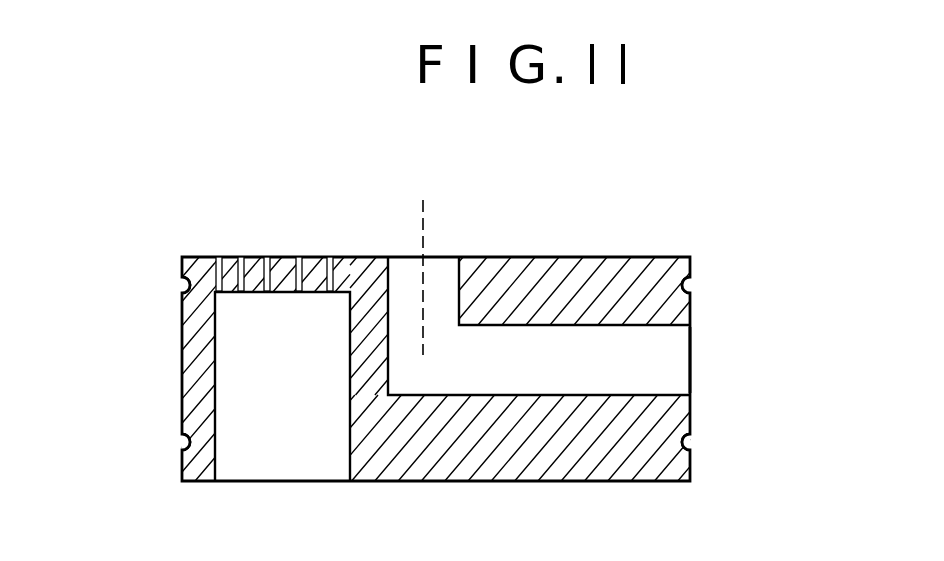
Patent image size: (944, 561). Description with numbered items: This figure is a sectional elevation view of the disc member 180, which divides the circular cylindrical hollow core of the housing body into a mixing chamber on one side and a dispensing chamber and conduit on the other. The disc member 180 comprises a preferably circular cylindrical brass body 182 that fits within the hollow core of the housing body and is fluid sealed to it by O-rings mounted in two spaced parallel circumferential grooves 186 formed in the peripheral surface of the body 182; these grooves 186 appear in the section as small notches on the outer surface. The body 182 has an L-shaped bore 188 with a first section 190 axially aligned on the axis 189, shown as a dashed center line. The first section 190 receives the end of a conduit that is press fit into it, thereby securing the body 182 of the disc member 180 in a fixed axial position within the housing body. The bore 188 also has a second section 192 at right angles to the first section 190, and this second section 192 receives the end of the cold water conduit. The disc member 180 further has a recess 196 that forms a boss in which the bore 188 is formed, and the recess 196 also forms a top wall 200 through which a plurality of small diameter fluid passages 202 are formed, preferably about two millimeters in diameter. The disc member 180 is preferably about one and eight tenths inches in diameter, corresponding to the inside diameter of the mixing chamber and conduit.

The disc member 180 is at (140, 425).
The body 182 is at (181, 348).
The circumferential grooves 186 is at (692, 283).
The L-shaped bore 188 is at (677, 370).
The axis 189 is at (421, 237).
The first section 190 is at (457, 283).
The second section 192 is at (590, 367).
The recess 196 is at (305, 446).
The top wall 200 is at (243, 265).
The fluid passages 202 is at (299, 292).